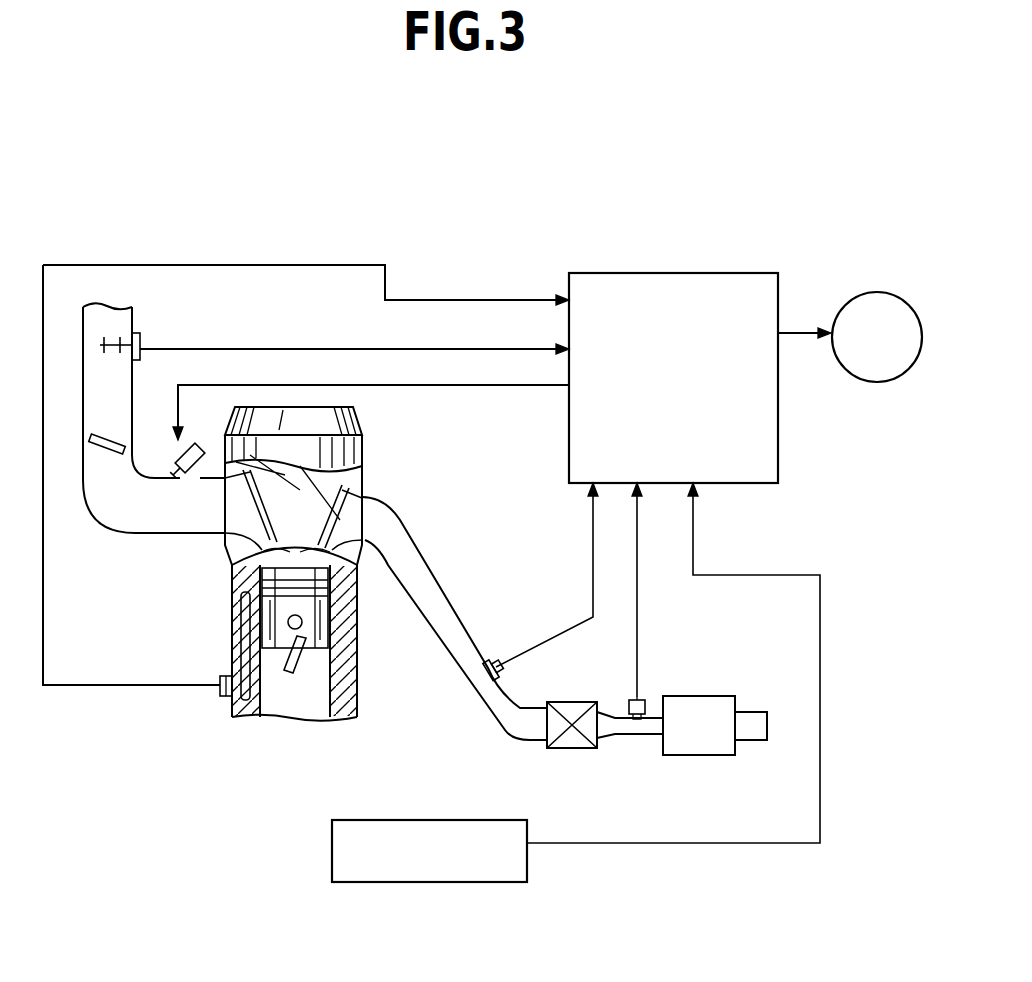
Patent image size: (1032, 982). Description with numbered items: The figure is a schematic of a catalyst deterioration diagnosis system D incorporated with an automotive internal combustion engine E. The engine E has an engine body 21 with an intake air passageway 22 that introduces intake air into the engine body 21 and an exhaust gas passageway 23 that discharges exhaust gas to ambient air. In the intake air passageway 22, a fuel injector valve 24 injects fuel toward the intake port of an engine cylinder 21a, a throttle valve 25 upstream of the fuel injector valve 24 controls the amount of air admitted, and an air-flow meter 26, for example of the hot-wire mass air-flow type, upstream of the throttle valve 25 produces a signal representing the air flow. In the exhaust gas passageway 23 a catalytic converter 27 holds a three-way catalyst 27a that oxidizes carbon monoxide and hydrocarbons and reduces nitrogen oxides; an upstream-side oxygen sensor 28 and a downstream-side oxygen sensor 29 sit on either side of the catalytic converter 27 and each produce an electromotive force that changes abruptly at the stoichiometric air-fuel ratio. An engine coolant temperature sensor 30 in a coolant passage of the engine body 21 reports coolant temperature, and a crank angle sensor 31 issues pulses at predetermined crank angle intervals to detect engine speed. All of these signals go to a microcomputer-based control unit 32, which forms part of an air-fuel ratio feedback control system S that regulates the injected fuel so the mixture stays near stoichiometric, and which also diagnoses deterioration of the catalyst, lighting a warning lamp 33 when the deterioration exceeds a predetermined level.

The engine body 21 is at (357, 650).
The engine cylinder 21a is at (280, 575).
The intake air passageway 22 is at (148, 518).
The exhaust gas passageway 23 is at (438, 602).
The fuel injector valve 24 is at (176, 461).
The throttle valve 25 is at (95, 453).
The air-flow meter 26 is at (110, 340).
The catalytic converter 27 is at (583, 694).
The catalyst 27a is at (572, 749).
The upstream-side oxygen sensor 28 is at (492, 660).
The downstream-side oxygen sensor 29 is at (648, 700).
The engine coolant temperature sensor 30 is at (222, 700).
The crank angle sensor 31 is at (378, 823).
The control unit 32 is at (677, 273).
The warning lamp 33 is at (846, 303).
The air-fuel ratio feedback control system S is at (530, 443).
The catalyst diagnosis system D is at (822, 482).
The internal combustion engine E is at (252, 768).